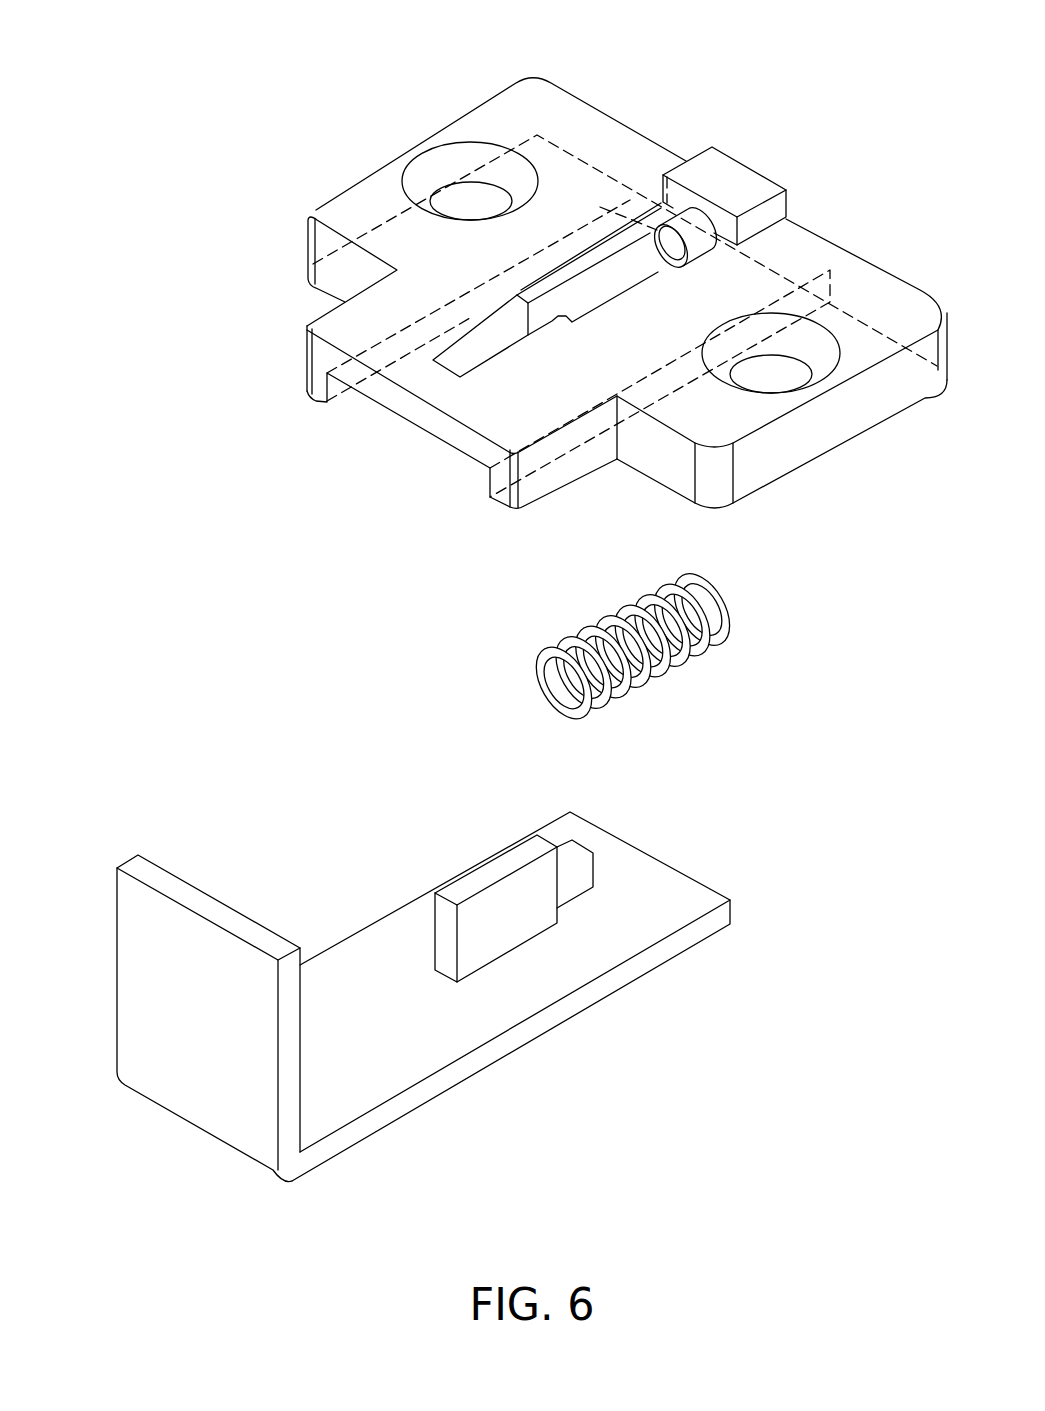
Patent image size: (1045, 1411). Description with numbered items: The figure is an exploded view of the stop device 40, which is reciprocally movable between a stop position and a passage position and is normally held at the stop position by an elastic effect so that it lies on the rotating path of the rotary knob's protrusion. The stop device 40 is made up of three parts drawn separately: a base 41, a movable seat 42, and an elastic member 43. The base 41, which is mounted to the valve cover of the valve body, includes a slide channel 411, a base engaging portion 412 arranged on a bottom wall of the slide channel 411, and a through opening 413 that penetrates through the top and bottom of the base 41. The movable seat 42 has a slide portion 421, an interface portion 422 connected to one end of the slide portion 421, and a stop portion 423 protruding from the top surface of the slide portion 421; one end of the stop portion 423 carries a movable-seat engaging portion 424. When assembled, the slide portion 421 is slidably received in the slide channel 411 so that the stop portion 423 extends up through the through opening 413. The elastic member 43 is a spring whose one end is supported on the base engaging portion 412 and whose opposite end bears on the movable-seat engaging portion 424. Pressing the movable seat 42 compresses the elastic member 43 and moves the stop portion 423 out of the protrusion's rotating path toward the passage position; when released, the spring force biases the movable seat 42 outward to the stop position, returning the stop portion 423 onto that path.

The stop device 40 is at (250, 90).
The base 41 is at (613, 278).
The slide channel 411 is at (343, 398).
The base engaging portion 412 is at (695, 223).
The through opening 413 is at (636, 292).
The movable seat 42 is at (381, 1016).
The slide portion 421 is at (525, 1042).
The interface portion 422 is at (150, 993).
The stop portion 423 is at (572, 872).
The movable-seat engaging portion 424 is at (593, 872).
The elastic member 43 is at (670, 660).